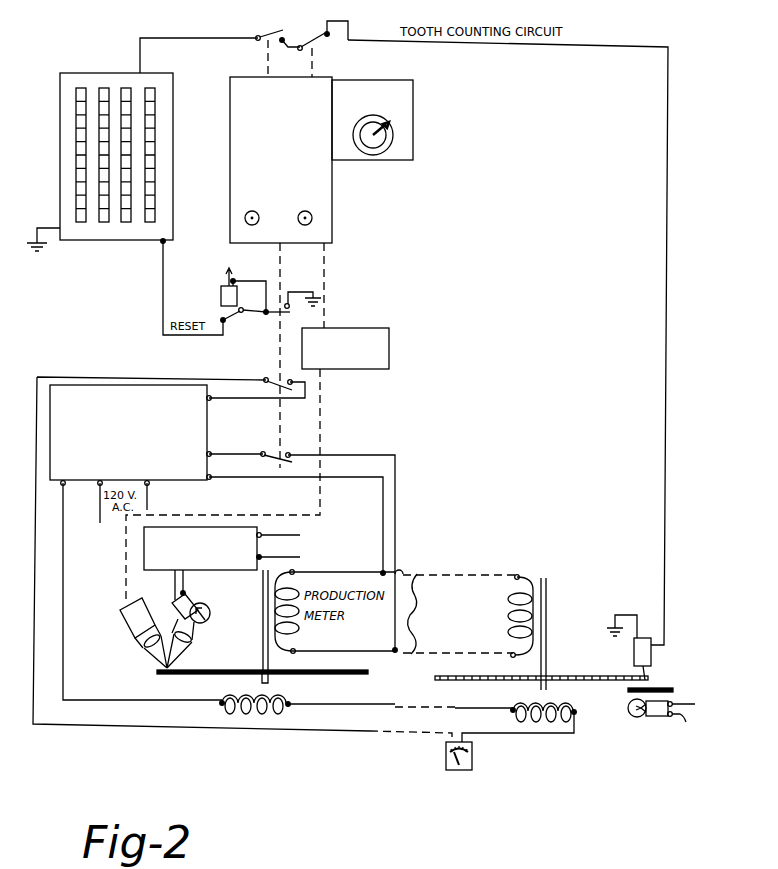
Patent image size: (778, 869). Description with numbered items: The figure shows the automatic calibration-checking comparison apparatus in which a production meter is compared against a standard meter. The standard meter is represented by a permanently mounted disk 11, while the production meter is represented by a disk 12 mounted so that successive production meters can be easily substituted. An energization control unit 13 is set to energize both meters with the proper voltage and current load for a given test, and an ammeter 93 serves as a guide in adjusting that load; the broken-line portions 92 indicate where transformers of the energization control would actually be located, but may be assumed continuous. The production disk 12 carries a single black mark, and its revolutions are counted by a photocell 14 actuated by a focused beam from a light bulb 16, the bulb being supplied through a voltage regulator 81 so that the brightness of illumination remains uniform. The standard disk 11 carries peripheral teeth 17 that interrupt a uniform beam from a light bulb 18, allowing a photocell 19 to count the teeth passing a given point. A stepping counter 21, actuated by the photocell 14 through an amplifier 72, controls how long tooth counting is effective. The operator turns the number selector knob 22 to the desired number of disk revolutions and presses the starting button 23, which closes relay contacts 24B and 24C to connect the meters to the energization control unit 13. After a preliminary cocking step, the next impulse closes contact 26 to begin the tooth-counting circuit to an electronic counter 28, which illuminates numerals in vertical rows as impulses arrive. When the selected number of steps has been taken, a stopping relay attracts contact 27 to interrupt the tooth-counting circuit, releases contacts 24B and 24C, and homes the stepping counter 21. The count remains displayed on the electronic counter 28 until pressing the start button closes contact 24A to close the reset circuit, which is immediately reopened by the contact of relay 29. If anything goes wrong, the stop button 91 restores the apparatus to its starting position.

The standard meter disk 11 is at (550, 684).
The production meter disk 12 is at (227, 669).
The energization control unit 13 is at (72, 392).
The photocell 14 is at (130, 622).
The light bulb 16 is at (210, 611).
The peripheral teeth 17 is at (663, 681).
The light bulb 18 is at (636, 717).
The photocell 19 is at (633, 656).
The stepping counter 21 is at (332, 199).
The number selector knob 22 is at (395, 143).
The starting button 23 is at (250, 212).
The contact 24A is at (289, 314).
The relay contact 24B is at (268, 378).
The relay contact 24C is at (268, 452).
The contact 26 is at (269, 33).
The contact 27 is at (321, 42).
The electronic counter 28 is at (167, 123).
The relay 29 is at (221, 297).
The amplifier 72 is at (389, 353).
The voltage regulator 81 is at (192, 572).
The stop button 91 is at (305, 211).
The broken-line portions 92 is at (416, 733).
The ammeter 93 is at (446, 763).